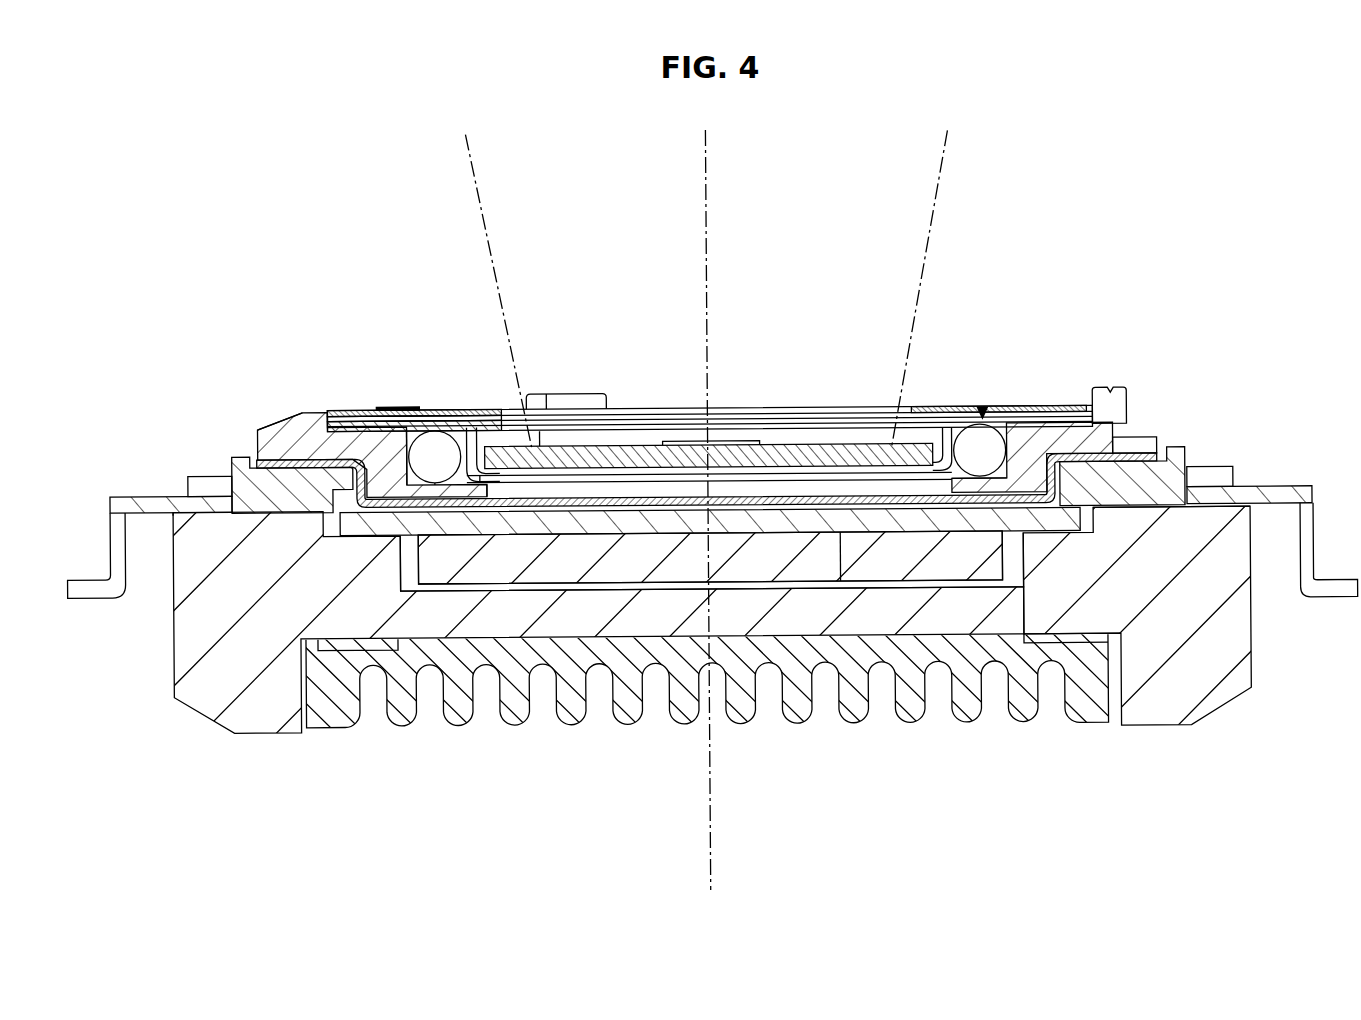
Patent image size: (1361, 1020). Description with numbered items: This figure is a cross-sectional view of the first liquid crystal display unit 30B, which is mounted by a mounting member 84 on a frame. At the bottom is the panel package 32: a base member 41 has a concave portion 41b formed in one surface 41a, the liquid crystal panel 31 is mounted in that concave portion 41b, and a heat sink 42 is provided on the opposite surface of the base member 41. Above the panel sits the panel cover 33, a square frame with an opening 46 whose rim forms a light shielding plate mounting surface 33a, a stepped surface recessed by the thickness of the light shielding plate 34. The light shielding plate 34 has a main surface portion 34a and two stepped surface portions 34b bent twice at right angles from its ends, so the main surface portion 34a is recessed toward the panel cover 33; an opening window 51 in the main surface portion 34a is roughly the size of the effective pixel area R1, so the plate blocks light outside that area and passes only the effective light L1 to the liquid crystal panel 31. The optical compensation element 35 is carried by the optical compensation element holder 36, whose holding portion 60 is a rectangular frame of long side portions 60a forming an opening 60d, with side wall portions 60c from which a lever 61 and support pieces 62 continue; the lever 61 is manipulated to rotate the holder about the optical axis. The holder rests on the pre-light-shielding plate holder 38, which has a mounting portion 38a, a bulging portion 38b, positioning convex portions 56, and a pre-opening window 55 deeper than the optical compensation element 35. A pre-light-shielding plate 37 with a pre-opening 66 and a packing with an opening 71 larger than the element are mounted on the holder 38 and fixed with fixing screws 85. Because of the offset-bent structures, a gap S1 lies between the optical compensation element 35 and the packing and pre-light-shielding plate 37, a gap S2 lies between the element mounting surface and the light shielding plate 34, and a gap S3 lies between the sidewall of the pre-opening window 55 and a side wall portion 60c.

The first liquid crystal display unit 30B is at (208, 214).
The liquid crystal panel 31 is at (945, 580).
The panel package 32 is at (160, 672).
The panel cover 33 is at (1190, 458).
The light shielding plate mounting surface 33a is at (245, 459).
The light shielding plate 34 is at (274, 383).
The main surface portion 34a is at (350, 440).
The stepped surface portions 34b is at (290, 437).
The optical compensation element 35 is at (634, 445).
The optical compensation element holder 36 is at (985, 410).
The pre-light-shielding plate 37 is at (1010, 432).
The pre-light-shielding plate holder 38 is at (303, 399).
The mounting portion 38a is at (1118, 433).
The bulging portion 38b is at (1020, 557).
The base member 41 is at (1250, 684).
The surface of the base member 41a is at (1240, 514).
The concave portion 41b is at (1100, 586).
The heat sink 42 is at (348, 702).
The opening 46 is at (1125, 450).
The opening window 51 is at (565, 499).
The pre-opening window 55 is at (996, 432).
The convex portions 56 is at (425, 431).
The holding portion 60 is at (516, 350).
The long side portions 60a is at (460, 414).
The side wall portions 60c is at (430, 406).
The opening 60d is at (490, 423).
The lever 61 is at (1116, 396).
The support pieces 62 is at (392, 428).
The pre-opening 66 is at (945, 434).
The opening 71 is at (960, 432).
The mounting member 84 is at (1308, 501).
The fixing screws 85 is at (588, 393).
The effective light L1 is at (490, 241).
The gap S1 is at (545, 454).
The gap S2 is at (478, 483).
The gap S3 is at (437, 485).
The effective pixel area R1 is at (842, 566).